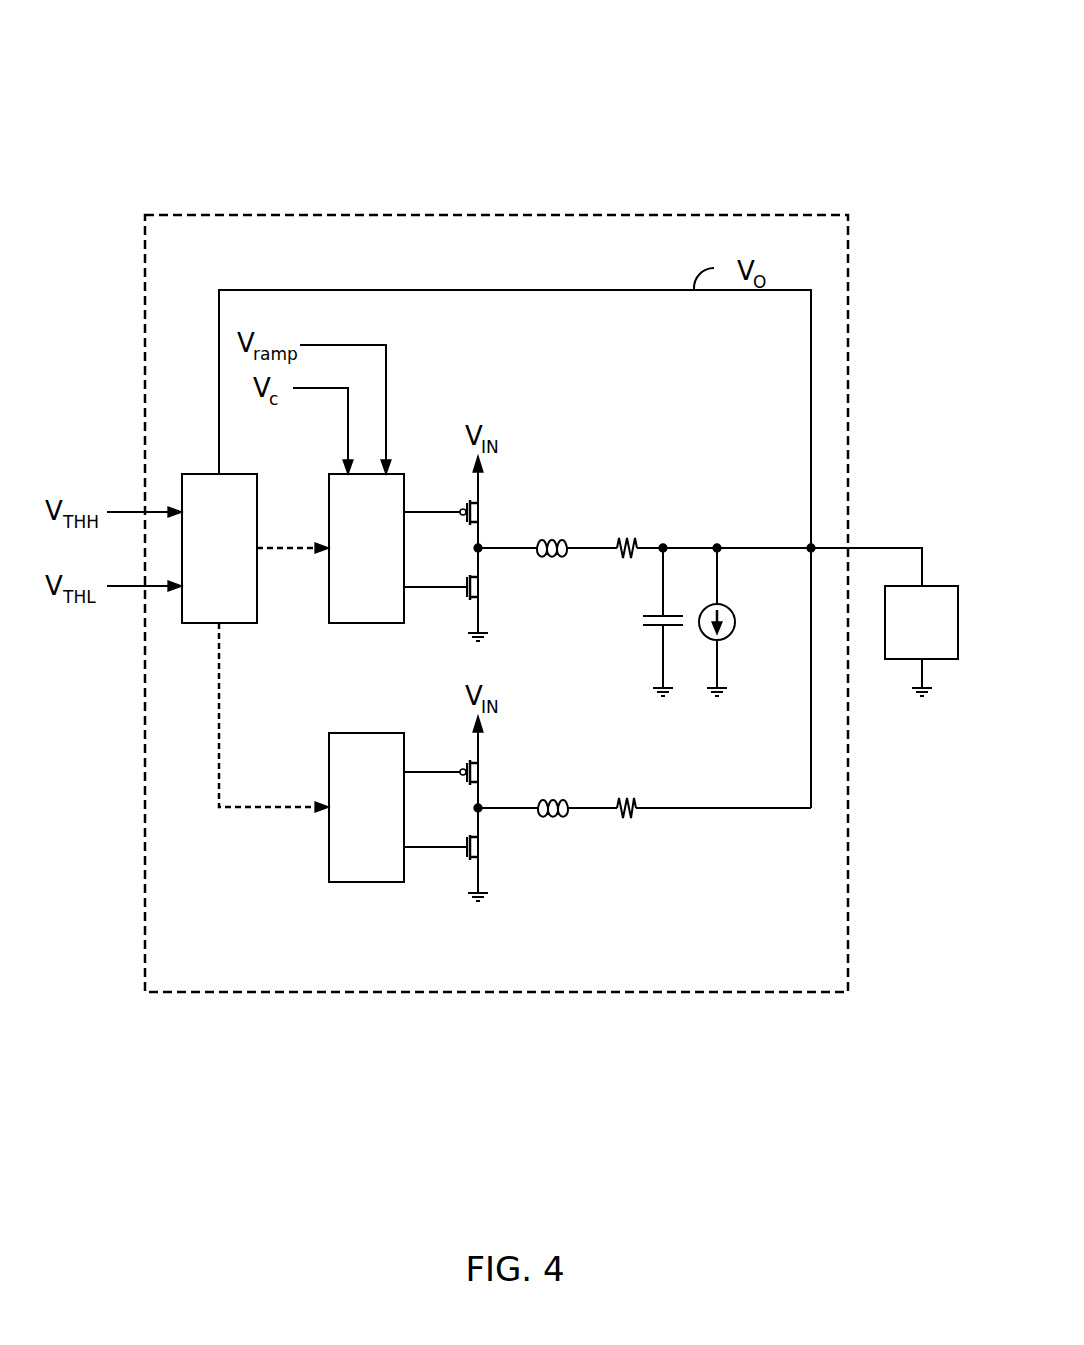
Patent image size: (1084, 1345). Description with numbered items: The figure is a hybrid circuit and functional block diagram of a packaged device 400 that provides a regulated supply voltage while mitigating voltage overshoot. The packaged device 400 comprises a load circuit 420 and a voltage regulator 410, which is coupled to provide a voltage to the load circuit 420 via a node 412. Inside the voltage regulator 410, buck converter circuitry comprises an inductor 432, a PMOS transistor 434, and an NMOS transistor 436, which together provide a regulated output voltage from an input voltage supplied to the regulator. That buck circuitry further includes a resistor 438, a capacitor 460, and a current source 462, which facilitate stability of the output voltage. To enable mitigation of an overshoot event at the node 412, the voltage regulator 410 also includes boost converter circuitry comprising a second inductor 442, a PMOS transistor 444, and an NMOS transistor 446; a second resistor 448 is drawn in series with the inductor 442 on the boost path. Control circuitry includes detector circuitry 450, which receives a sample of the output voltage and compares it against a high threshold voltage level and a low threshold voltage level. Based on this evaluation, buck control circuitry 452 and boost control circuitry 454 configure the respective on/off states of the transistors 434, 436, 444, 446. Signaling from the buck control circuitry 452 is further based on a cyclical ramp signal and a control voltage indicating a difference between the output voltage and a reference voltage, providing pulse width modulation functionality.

The packaged device 400 is at (138, 76).
The voltage regulator 410 is at (751, 215).
The node 412 is at (800, 541).
The load circuit 420 is at (901, 636).
The inductor 432 is at (551, 534).
The PMOS transistor 434 is at (471, 512).
The NMOS transistor 436 is at (471, 590).
The resistor 438 is at (627, 534).
The inductor 442 is at (553, 823).
The PMOS transistor 444 is at (471, 769).
The NMOS transistor 446 is at (471, 848).
The second inductor resistance 448 is at (628, 823).
The detector circuitry 450 is at (241, 563).
The buck control circuitry 452 is at (388, 563).
The boost control circuitry 454 is at (388, 822).
The capacitor 460 is at (658, 628).
The current source 462 is at (734, 630).